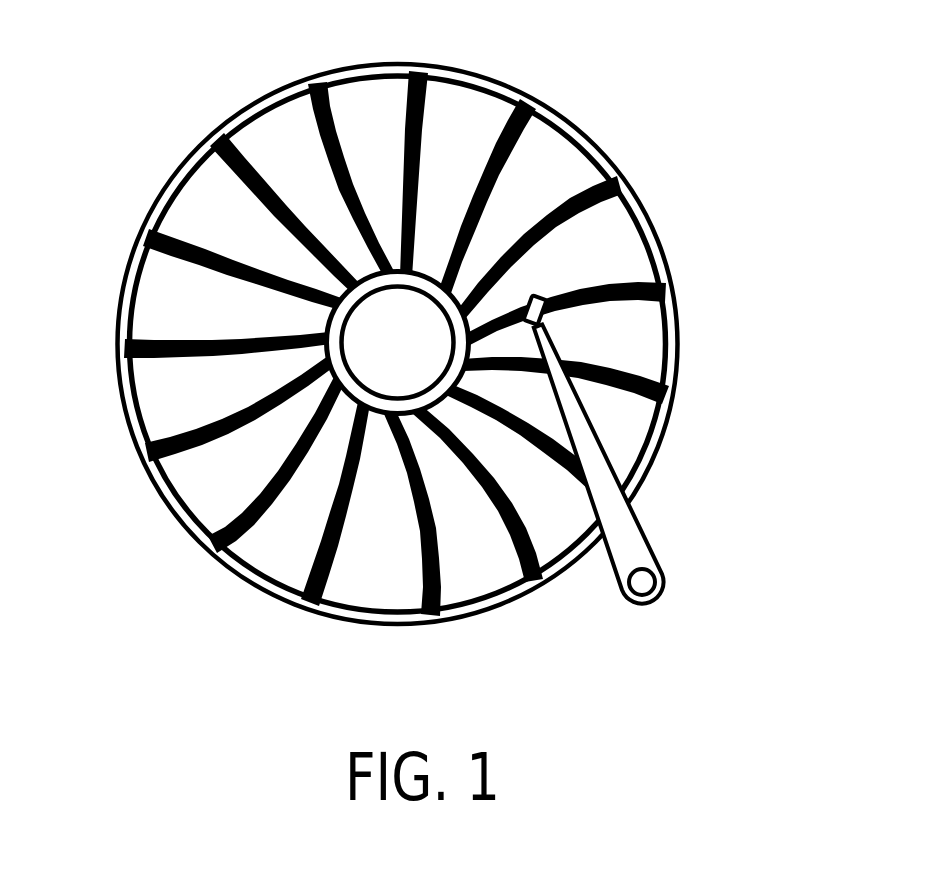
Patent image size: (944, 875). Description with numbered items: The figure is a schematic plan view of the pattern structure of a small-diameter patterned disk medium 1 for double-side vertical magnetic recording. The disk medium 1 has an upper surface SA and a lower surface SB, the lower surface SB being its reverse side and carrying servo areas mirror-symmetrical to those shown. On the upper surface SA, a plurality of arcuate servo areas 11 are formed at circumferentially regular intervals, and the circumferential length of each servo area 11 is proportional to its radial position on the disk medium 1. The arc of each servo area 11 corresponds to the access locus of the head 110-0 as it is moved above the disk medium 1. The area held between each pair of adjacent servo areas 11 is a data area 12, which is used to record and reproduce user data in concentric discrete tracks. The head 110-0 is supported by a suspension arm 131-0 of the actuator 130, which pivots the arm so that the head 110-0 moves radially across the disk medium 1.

The patterned disk medium 1 is at (354, 344).
The arcuate servo area 11 is at (533, 103).
The data area 12 is at (567, 158).
The head 110-0 is at (543, 297).
The suspension arm 131-0 is at (637, 513).
The actuator 130 is at (679, 417).
The upper surface SA is at (188, 483).
The lower surface SB is at (217, 503).